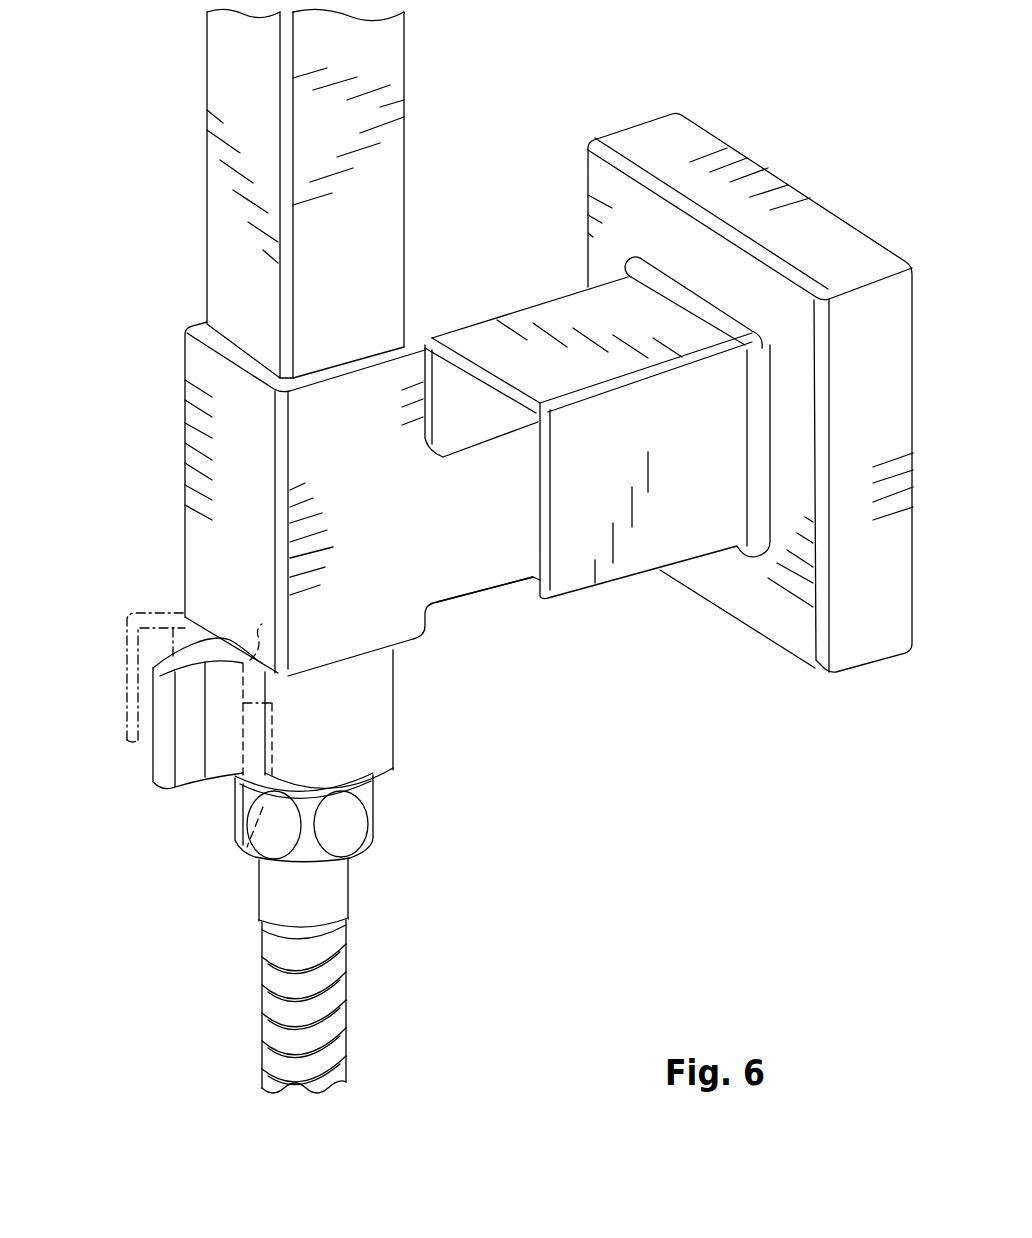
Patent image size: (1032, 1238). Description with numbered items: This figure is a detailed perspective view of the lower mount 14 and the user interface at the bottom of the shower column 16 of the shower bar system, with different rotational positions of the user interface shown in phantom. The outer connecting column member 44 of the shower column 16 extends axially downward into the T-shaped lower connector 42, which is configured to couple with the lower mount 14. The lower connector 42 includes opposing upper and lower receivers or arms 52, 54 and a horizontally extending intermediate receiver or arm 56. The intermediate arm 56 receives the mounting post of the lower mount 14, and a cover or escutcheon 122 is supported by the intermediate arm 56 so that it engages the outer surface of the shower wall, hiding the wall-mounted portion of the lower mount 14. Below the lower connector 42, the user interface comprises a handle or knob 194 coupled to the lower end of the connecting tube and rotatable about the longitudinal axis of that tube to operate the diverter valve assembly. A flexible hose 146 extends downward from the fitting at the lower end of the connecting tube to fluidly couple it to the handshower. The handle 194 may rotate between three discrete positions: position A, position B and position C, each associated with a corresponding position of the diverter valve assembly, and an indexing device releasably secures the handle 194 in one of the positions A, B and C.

The connecting column member 44 is at (228, 80).
The shower column 16 is at (178, 182).
The lower connector 42 is at (195, 437).
The lower mount 14 is at (162, 496).
The upper arm 52 is at (407, 372).
The cover 122 is at (820, 243).
The lower arm 54 is at (398, 618).
The intermediate arm 56 is at (483, 567).
The handle 194 is at (353, 727).
The flexible hose 146 is at (338, 1018).
The position A is at (128, 655).
The position B is at (220, 827).
The position C is at (243, 843).